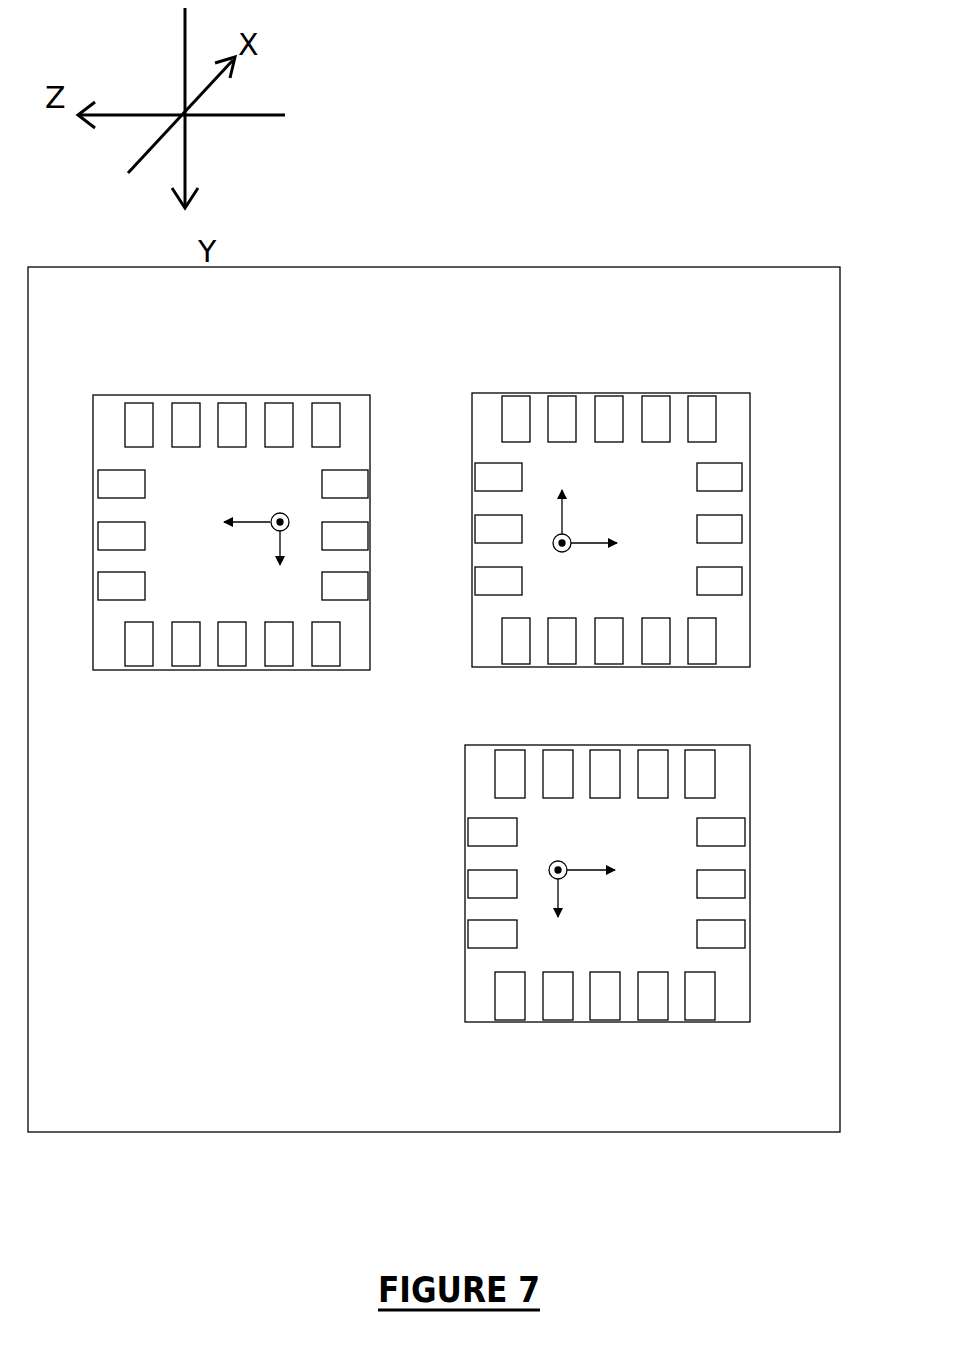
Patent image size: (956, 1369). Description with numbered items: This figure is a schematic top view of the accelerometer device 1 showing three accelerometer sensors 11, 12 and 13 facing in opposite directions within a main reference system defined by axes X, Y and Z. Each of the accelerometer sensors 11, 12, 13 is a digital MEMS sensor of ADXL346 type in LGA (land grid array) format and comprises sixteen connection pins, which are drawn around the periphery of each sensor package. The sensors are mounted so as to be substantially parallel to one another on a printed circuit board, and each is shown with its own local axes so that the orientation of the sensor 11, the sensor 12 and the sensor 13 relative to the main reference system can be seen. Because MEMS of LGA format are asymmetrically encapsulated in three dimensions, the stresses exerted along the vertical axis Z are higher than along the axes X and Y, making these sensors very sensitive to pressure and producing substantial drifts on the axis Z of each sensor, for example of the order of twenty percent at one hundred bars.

The accelerometer device 1 is at (539, 1100).
The accelerometer sensor 11 is at (635, 392).
The accelerometer sensor 12 is at (453, 950).
The accelerometer sensor 13 is at (240, 675).